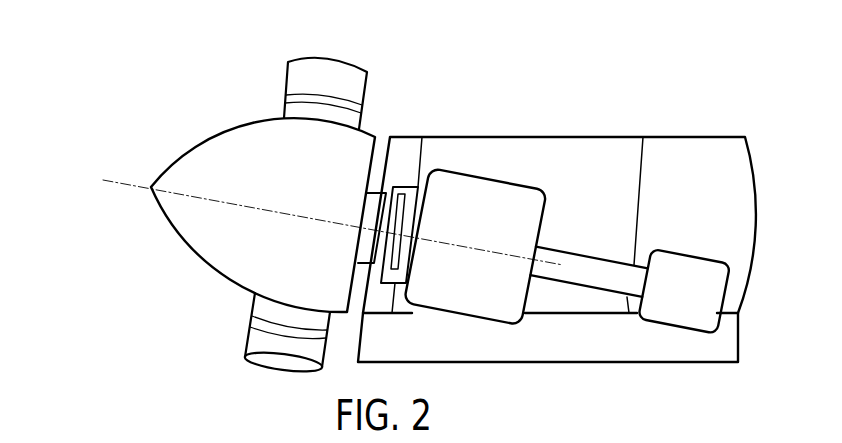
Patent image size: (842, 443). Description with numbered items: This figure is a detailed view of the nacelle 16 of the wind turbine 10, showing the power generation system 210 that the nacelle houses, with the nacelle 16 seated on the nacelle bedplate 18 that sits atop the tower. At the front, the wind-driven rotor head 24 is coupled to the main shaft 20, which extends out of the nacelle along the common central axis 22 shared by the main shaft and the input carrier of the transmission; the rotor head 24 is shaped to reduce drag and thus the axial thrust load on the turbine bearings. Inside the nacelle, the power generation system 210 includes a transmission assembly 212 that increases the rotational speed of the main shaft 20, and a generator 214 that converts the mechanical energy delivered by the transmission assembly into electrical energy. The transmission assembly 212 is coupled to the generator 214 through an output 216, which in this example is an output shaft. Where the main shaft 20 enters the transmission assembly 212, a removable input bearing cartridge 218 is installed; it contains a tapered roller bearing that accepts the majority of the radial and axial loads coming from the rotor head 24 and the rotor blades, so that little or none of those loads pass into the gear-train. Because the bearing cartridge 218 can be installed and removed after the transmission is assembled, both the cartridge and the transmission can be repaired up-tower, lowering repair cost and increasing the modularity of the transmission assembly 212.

The wind turbine 10 is at (113, 80).
The nacelle 16 is at (665, 63).
The nacelle bedplate 18 is at (638, 362).
The main shaft 20 is at (367, 248).
The central axis 22 is at (140, 185).
The rotor head 24 is at (223, 128).
The power generation system 210 is at (605, 128).
The transmission assembly 212 is at (495, 177).
The generator 214 is at (682, 254).
The output 216 is at (587, 256).
The input bearing cartridge 218 is at (397, 187).